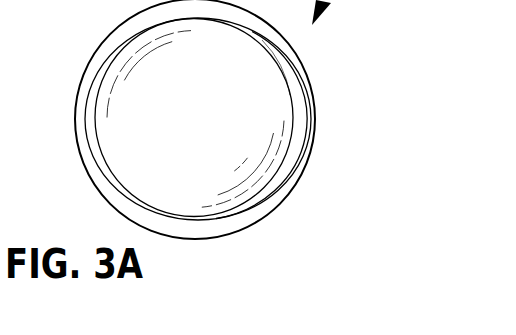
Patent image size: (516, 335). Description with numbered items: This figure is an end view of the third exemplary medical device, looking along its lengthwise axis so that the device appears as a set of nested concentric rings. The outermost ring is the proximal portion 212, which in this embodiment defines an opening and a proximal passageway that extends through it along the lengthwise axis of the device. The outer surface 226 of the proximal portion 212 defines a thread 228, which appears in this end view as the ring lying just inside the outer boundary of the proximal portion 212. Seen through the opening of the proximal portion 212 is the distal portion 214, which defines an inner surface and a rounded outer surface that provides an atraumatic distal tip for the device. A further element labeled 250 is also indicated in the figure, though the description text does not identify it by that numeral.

The proximal portion 212 is at (277, 205).
The distal portion 214 is at (268, 97).
The outer surface 226 is at (367, 181).
The thread 228 is at (311, 126).
The seal 250 is at (277, 58).